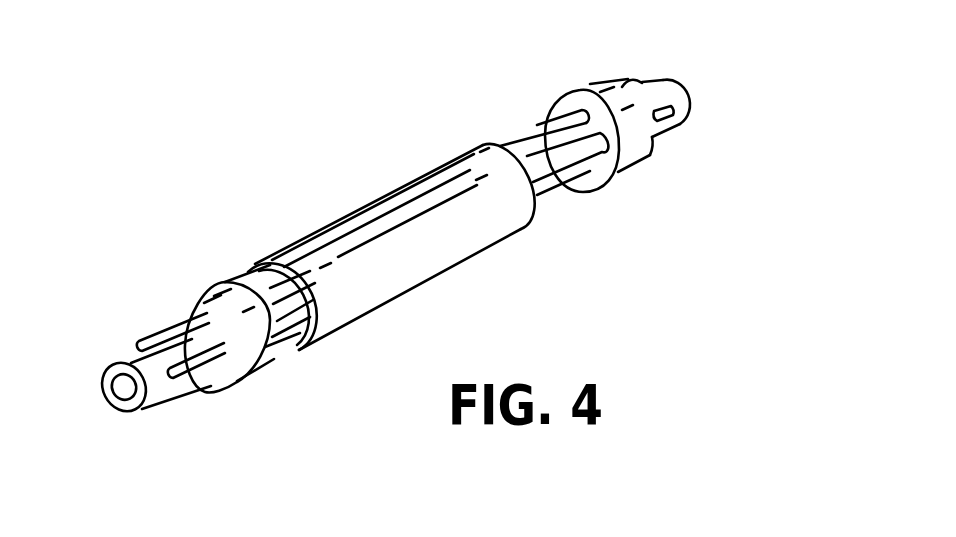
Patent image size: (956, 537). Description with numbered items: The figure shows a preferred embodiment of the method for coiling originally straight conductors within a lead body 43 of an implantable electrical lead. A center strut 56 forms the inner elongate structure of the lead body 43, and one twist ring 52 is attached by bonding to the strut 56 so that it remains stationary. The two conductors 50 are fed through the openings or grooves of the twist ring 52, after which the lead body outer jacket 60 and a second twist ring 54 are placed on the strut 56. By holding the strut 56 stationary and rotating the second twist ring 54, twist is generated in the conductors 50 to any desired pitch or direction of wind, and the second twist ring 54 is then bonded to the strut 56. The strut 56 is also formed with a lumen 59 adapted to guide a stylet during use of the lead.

The lead body 43 is at (278, 163).
The conductors 50 is at (533, 140).
The twist ring 52 is at (263, 365).
The second twist ring 54 is at (645, 160).
The center strut 56 is at (675, 98).
The lumen 59 is at (134, 380).
The lead body outer jacket 60 is at (477, 253).